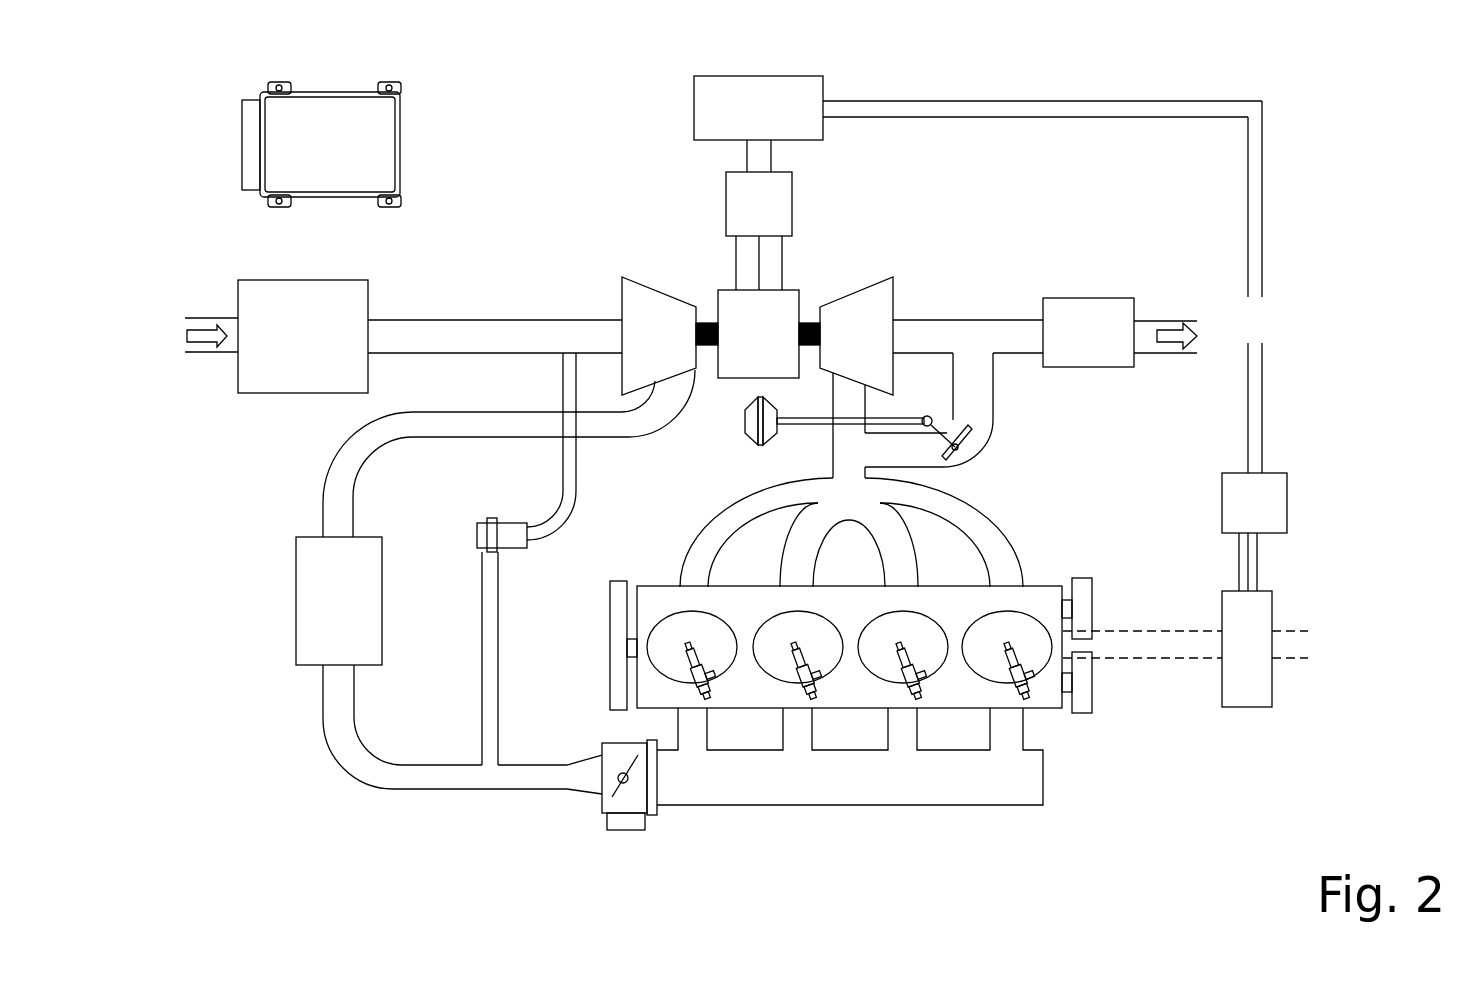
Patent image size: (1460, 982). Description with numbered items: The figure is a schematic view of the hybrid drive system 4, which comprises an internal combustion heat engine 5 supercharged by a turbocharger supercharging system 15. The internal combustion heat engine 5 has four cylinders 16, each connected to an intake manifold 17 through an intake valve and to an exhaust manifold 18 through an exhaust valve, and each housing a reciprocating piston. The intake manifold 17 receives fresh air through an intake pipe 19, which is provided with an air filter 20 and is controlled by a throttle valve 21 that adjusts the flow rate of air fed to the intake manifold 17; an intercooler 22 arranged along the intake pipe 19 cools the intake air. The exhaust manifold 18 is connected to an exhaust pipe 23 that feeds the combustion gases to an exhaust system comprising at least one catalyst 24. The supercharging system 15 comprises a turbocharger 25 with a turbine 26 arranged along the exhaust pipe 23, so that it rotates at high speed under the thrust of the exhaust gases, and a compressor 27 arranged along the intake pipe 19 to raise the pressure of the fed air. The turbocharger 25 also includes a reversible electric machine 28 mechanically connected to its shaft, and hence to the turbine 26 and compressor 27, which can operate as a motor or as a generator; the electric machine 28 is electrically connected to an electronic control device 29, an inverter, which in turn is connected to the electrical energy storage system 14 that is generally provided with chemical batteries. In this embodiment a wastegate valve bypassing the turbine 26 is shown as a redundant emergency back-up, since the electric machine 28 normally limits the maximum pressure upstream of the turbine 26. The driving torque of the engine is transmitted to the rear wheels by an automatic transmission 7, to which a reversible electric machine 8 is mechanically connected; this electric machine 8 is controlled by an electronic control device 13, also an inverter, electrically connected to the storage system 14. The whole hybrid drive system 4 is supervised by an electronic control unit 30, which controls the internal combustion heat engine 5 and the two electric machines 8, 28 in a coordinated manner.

The hybrid drive system 4 is at (212, 878).
The internal combustion heat engine 5 is at (445, 852).
The automatic transmission 7 is at (1166, 685).
The electric machine 8 is at (1247, 649).
The electronic control device 13 is at (1254, 532).
The electrical energy storage system 14 is at (978, 274).
The turbocharger supercharging system 15 is at (655, 212).
The cylinders 16 is at (849, 655).
The intake manifold 17 is at (850, 756).
The exhaust manifold 18 is at (851, 532).
The intake pipe 19 is at (337, 498).
The air filter 20 is at (276, 336).
The throttle valve 21 is at (623, 802).
The intercooler 22 is at (339, 601).
The exhaust pipe 23 is at (1019, 328).
The catalyst 24 is at (1120, 332).
The turbocharger 25 is at (833, 232).
The turbine 26 is at (832, 322).
The compressor 27 is at (652, 310).
The electric machine 28 is at (758, 334).
The electronic control device 29 is at (759, 215).
The electronic control unit 30 is at (321, 144).